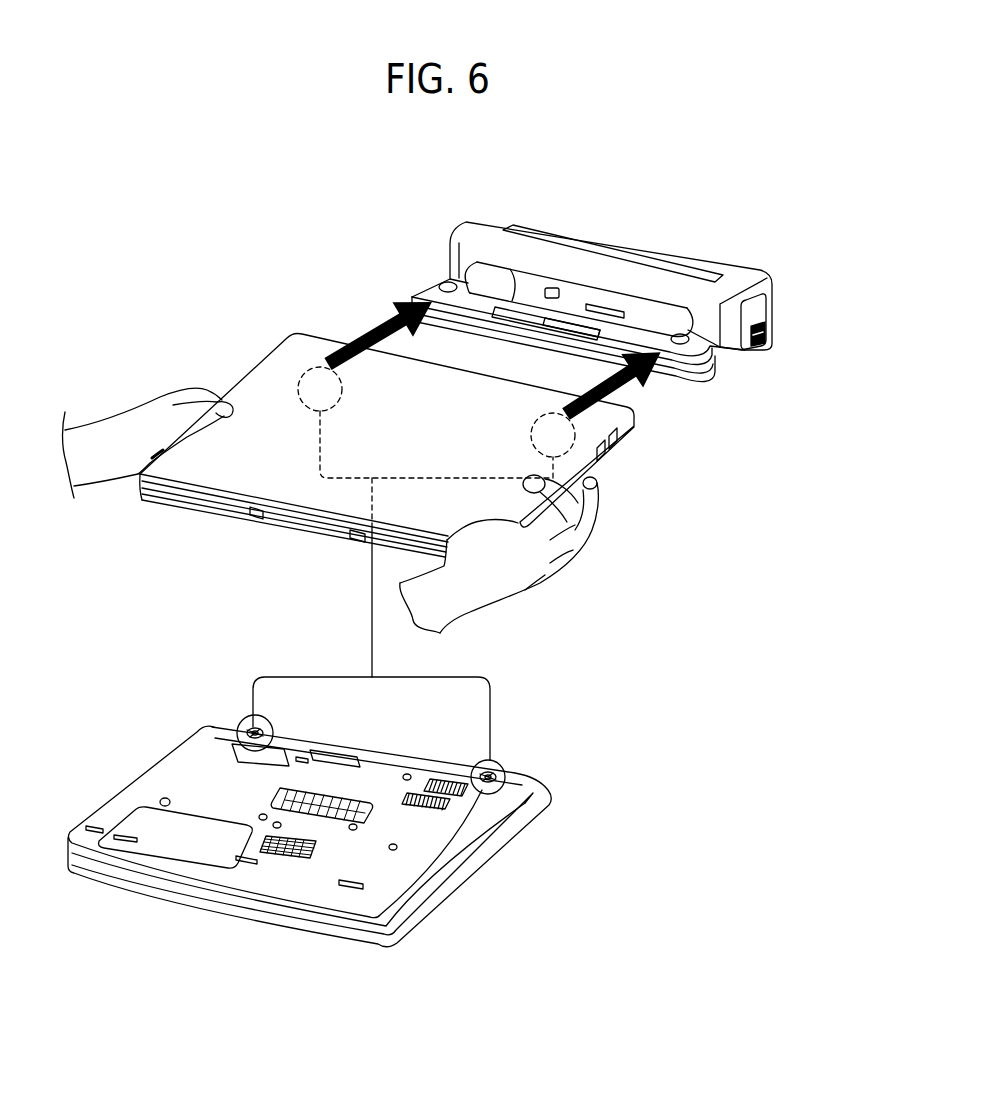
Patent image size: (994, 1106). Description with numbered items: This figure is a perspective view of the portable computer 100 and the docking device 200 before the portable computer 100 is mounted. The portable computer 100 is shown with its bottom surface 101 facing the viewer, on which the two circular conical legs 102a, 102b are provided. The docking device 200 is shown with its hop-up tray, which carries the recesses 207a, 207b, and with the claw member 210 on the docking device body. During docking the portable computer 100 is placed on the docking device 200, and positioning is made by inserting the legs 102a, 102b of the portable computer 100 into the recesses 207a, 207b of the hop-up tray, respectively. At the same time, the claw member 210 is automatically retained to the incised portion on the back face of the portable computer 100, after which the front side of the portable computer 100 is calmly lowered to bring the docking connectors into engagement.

The portable computer 100 is at (162, 524).
The bottom surface 101 is at (133, 793).
The leg 102a is at (499, 768).
The leg 102b is at (249, 719).
The docking device 200 is at (574, 306).
The recess 207a is at (448, 284).
The recess 207b is at (678, 340).
The claw member 210 is at (553, 290).